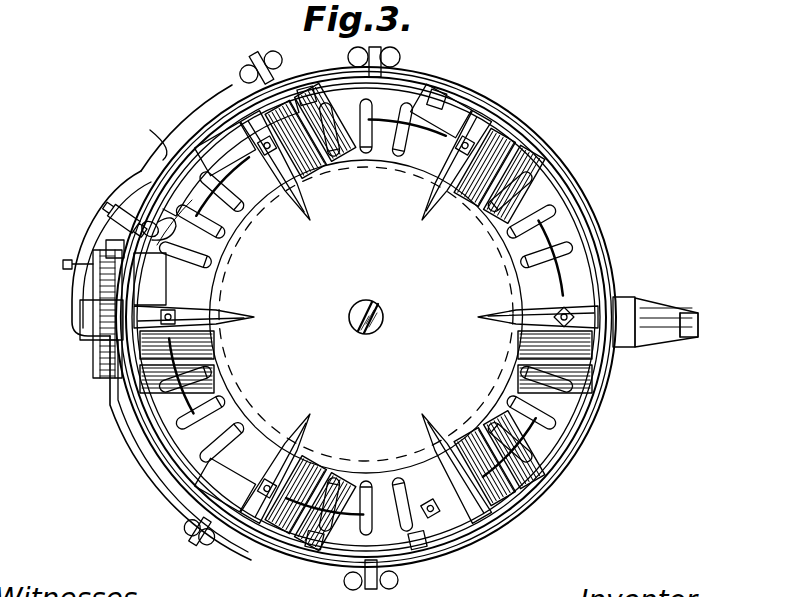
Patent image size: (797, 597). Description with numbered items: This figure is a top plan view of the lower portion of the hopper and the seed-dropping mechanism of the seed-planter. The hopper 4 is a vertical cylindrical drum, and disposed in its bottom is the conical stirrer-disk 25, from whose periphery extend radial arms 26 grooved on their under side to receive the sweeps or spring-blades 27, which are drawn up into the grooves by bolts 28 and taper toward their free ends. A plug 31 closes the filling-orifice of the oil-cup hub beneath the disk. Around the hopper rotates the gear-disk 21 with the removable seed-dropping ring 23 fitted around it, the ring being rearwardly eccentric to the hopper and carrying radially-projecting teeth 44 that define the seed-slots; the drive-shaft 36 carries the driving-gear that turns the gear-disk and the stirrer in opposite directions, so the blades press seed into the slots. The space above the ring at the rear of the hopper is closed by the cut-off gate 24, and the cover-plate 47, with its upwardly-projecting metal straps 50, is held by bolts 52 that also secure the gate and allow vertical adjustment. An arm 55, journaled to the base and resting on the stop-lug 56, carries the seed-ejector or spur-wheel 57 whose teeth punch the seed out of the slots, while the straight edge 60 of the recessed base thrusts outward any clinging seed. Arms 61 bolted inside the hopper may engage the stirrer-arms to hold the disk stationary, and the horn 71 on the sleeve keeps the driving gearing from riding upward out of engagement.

The hopper 4 is at (466, 92).
The gear-disk 21 is at (366, 316).
The seed-dropping ring 23 is at (177, 225).
The cut-off gate 24 is at (220, 122).
The conical stirrer-disk 25 is at (366, 316).
The radial arms 26 is at (293, 184).
The sweeps or spring-blades 27 is at (303, 298).
The bolts 28 is at (300, 170).
The plug 31 is at (379, 310).
The drive-shaft 36 is at (672, 326).
The radially-projecting teeth 44 is at (560, 398).
The cover-plate 47 is at (143, 137).
The metal straps 50 is at (243, 84).
The bolts 52 is at (264, 62).
The arm 55 is at (122, 186).
The stop-lug 56 is at (63, 265).
The seed-ejector or spur-wheel 57 is at (96, 372).
The straight edge 60 is at (110, 408).
The arms 61 is at (421, 86).
The horn 71 is at (690, 308).